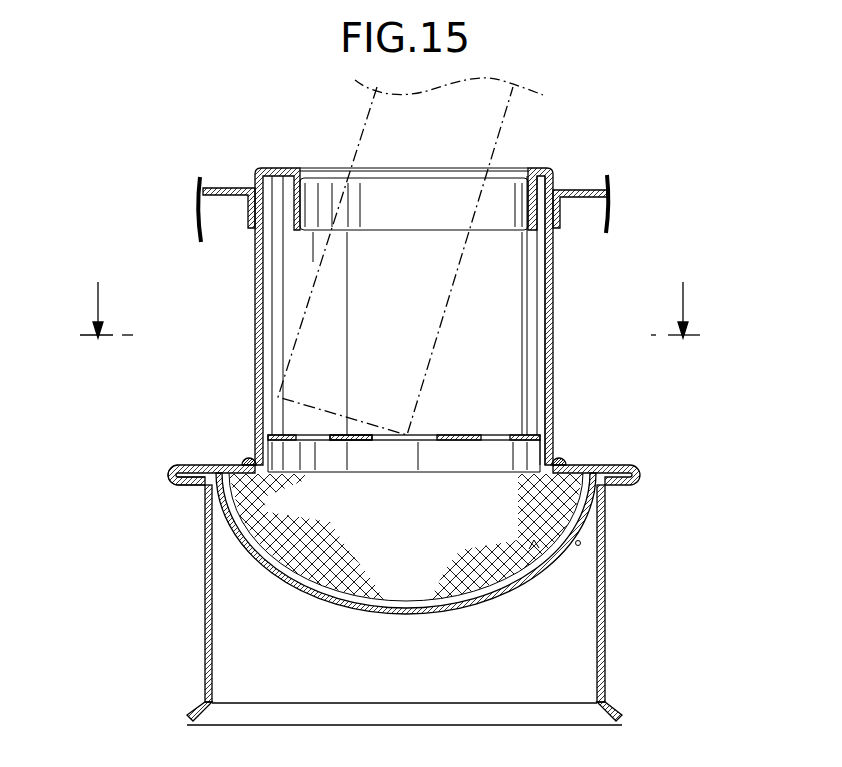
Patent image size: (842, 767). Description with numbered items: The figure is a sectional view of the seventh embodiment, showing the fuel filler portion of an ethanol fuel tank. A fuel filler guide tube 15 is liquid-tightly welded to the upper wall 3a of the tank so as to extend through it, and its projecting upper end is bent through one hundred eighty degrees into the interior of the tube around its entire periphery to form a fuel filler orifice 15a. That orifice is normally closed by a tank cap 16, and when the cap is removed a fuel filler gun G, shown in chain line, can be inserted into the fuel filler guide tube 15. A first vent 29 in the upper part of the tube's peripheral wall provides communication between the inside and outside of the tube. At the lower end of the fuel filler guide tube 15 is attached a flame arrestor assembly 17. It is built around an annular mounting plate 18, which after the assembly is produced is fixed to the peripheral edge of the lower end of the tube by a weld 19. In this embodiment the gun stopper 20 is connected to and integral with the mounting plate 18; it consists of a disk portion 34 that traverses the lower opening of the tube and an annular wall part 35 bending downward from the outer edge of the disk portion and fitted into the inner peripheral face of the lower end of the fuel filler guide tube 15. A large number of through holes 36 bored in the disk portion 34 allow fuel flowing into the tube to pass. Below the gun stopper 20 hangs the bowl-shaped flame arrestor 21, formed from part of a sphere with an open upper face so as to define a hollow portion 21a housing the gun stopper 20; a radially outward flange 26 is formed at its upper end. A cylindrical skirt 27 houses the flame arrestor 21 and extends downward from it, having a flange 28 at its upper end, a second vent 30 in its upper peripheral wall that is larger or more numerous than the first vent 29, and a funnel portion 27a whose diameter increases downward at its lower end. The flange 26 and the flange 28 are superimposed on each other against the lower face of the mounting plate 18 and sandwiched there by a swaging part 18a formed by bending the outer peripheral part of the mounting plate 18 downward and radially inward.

The fuel filler gun G is at (357, 140).
The tank cap 16 is at (385, 305).
The fuel filler guide tube 15 is at (553, 345).
The fuel filler orifice 15a is at (521, 200).
The first vent 29 is at (552, 256).
The upper wall 3a is at (583, 192).
The gun stopper 20 is at (454, 422).
The disk portion 34 is at (358, 436).
The weld 19 is at (567, 453).
The through holes 36 is at (495, 437).
The annular wall part 35 is at (528, 458).
The flame arrestor assembly 17 is at (727, 455).
The mounting plate 18 is at (613, 462).
The flange 26 is at (172, 467).
The flange 28 is at (170, 480).
The swaging part 18a is at (192, 488).
The flame arrestor 21 is at (555, 585).
The hollow portion 21a is at (421, 554).
The second vent 30 is at (530, 552).
The skirt 27 is at (605, 633).
The funnel portion 27a is at (613, 708).